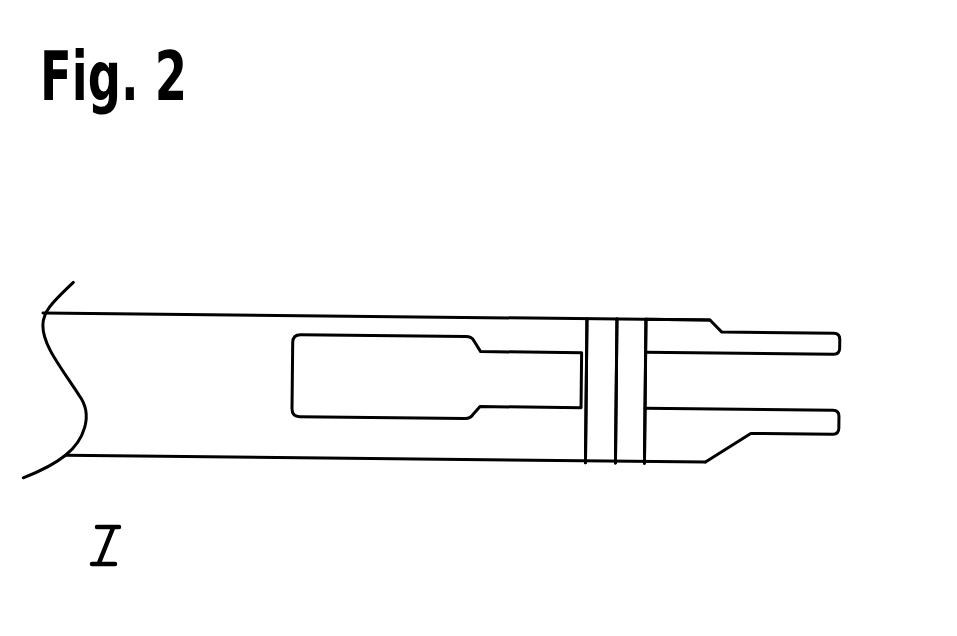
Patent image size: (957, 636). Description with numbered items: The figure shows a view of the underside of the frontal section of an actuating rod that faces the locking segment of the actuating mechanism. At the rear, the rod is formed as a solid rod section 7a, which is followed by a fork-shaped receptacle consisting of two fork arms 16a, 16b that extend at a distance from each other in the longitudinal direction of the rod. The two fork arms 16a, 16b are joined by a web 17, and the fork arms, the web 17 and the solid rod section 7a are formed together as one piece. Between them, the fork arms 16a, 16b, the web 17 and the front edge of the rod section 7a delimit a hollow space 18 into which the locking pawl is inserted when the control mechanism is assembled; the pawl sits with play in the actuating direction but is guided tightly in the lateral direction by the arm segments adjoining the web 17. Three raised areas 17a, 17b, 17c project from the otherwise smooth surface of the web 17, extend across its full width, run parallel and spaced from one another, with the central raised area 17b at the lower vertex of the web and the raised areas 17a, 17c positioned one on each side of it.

The solid rod section 7a is at (120, 331).
The fork arm 16a is at (414, 328).
The fork arm 16b is at (823, 440).
The web 17 is at (630, 333).
The raised area 17a is at (585, 461).
The raised area 17b is at (620, 463).
The raised area 17c is at (647, 462).
The hollow space 18 is at (407, 398).